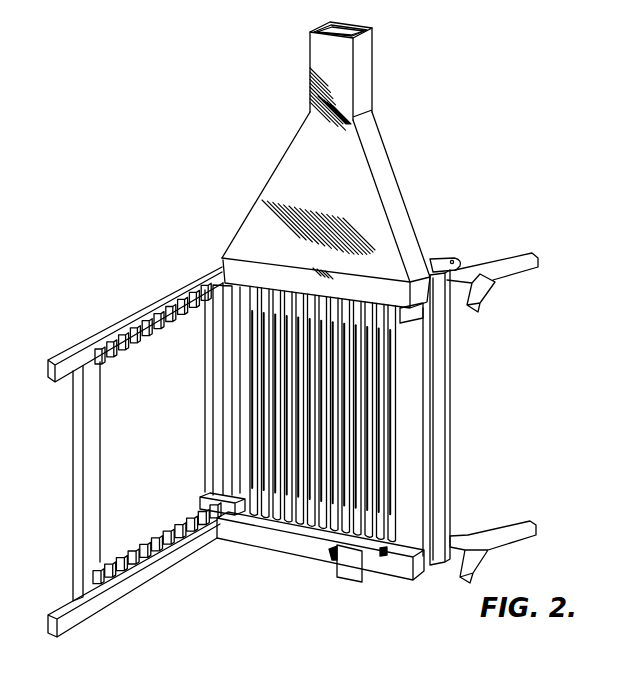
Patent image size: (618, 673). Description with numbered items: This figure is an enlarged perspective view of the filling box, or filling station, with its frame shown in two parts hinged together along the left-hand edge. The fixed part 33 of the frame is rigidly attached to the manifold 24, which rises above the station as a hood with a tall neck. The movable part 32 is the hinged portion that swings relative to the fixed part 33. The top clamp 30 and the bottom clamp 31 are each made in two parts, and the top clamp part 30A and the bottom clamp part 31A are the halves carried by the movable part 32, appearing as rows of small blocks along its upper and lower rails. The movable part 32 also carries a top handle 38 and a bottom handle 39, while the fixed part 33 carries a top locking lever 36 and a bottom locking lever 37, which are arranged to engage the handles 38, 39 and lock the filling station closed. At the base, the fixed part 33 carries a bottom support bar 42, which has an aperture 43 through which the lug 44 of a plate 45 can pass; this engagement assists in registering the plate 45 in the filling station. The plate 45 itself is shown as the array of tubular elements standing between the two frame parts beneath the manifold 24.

The manifold 24 is at (397, 193).
The top clamp 30 is at (153, 315).
The top clamp part 30A is at (150, 323).
The bottom clamp 31 is at (157, 542).
The bottom clamp part 31A is at (157, 551).
The movable frame part 32 is at (83, 473).
The fixed frame part 33 is at (430, 500).
The top locking lever 36 is at (507, 262).
The bottom locking lever 37 is at (505, 533).
The top handle 38 is at (67, 357).
The bottom handle 39 is at (68, 610).
The bottom support bar 42 is at (390, 568).
The aperture 43 is at (333, 558).
The lug 44 is at (348, 577).
The plate 45 is at (400, 428).